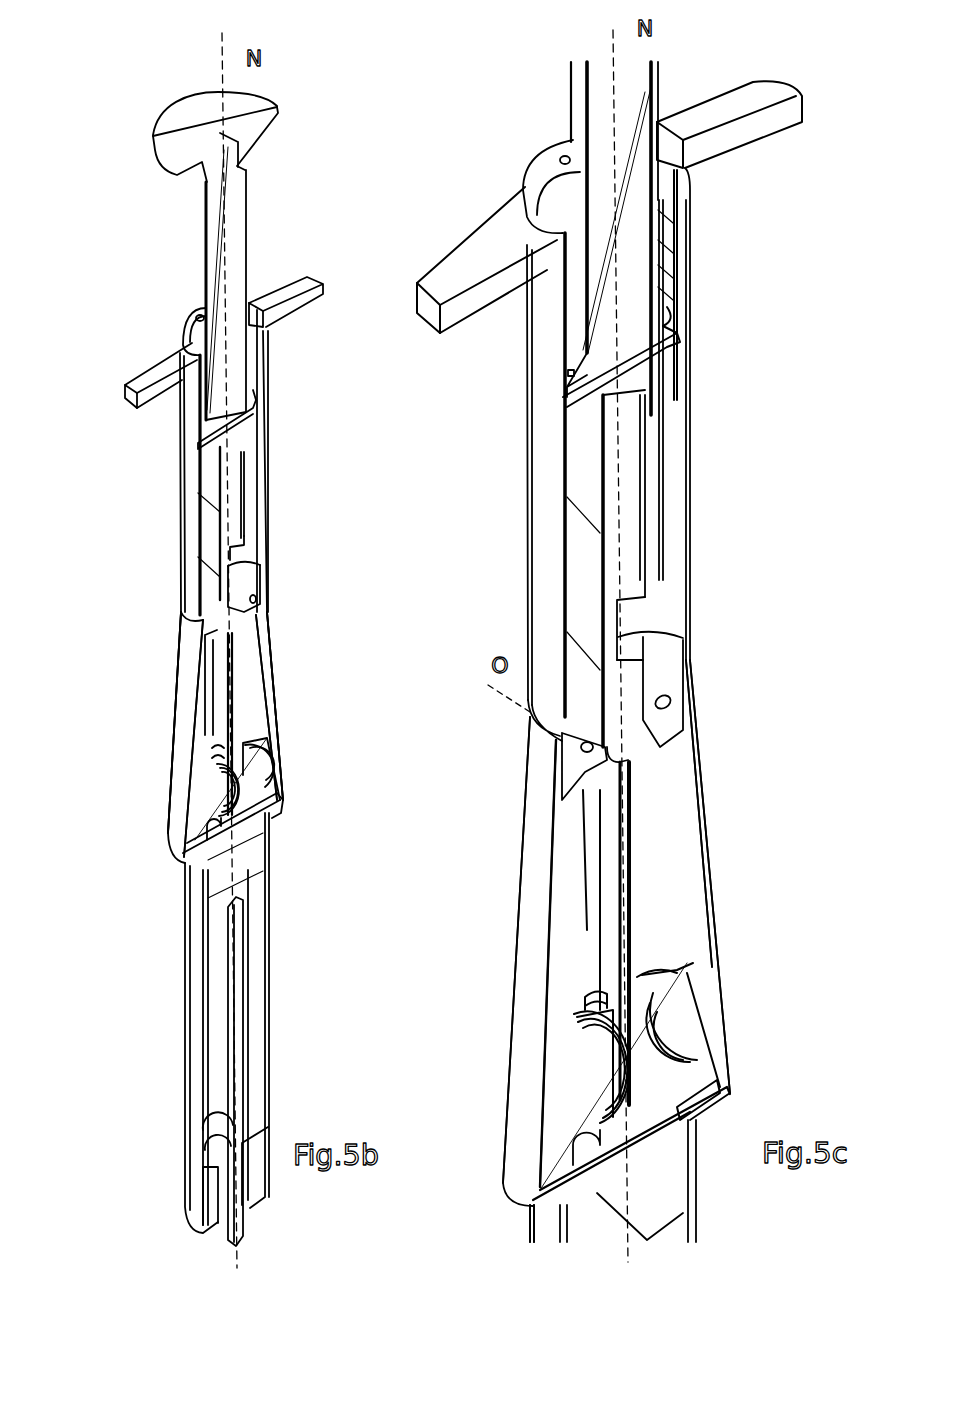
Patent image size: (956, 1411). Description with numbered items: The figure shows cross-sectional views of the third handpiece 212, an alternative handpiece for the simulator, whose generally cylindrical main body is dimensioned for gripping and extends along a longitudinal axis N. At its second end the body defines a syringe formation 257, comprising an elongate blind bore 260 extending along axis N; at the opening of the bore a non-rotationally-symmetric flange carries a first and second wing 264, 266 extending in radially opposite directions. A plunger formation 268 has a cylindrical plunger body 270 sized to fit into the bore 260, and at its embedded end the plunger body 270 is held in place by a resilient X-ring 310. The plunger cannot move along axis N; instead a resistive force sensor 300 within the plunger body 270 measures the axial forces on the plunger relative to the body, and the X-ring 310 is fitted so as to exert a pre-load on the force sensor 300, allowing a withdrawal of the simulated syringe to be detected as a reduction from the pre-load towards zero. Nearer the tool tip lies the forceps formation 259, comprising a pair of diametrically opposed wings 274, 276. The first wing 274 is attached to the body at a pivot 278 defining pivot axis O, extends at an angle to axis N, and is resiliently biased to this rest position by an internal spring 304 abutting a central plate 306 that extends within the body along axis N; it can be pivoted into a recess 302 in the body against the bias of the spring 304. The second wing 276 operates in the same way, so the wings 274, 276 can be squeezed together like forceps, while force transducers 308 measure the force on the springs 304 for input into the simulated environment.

In FIG. 5B, the third handpiece 212 is at (318, 566).
In FIG. 5B, the syringe formation 257 is at (298, 184).
In FIG. 5B, the forceps formation 259 is at (380, 615).
In FIG. 5C, the forceps formation 259 is at (772, 847).
In FIG. 5C, the elongate blind bore 260 is at (690, 268).
In FIG. 5B, the first wing 264 is at (151, 367).
In FIG. 5B, the second wing 266 is at (286, 282).
In FIG. 5B, the plunger formation 268 is at (127, 131).
In FIG. 5B, the cylindrical plunger body 270 is at (207, 259).
In FIG. 5C, the cylindrical plunger body 270 is at (600, 153).
In FIG. 5B, the first wing 274 is at (183, 706).
In FIG. 5C, the first wing 274 is at (532, 943).
In FIG. 5B, the second wing 276 is at (261, 684).
In FIG. 5C, the second wing 276 is at (700, 920).
In FIG. 5C, the pivot 278 is at (558, 772).
In FIG. 5C, the force sensor 300 is at (661, 398).
In FIG. 5C, the recess 302 is at (530, 1228).
In FIG. 5C, the internal spring 304 is at (558, 1090).
In FIG. 5C, the central plate 306 is at (604, 955).
In FIG. 5C, the force transducers 308 is at (652, 1082).
In FIG. 5C, the resilient X-ring 310 is at (692, 343).